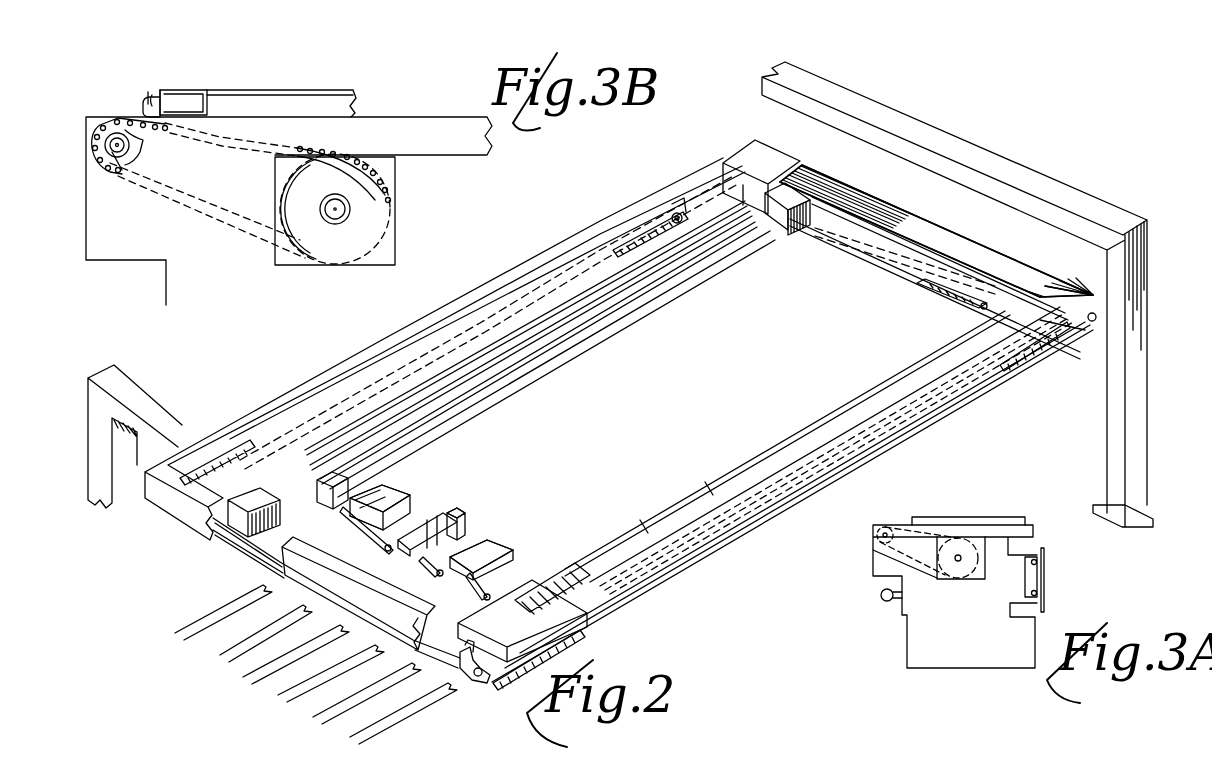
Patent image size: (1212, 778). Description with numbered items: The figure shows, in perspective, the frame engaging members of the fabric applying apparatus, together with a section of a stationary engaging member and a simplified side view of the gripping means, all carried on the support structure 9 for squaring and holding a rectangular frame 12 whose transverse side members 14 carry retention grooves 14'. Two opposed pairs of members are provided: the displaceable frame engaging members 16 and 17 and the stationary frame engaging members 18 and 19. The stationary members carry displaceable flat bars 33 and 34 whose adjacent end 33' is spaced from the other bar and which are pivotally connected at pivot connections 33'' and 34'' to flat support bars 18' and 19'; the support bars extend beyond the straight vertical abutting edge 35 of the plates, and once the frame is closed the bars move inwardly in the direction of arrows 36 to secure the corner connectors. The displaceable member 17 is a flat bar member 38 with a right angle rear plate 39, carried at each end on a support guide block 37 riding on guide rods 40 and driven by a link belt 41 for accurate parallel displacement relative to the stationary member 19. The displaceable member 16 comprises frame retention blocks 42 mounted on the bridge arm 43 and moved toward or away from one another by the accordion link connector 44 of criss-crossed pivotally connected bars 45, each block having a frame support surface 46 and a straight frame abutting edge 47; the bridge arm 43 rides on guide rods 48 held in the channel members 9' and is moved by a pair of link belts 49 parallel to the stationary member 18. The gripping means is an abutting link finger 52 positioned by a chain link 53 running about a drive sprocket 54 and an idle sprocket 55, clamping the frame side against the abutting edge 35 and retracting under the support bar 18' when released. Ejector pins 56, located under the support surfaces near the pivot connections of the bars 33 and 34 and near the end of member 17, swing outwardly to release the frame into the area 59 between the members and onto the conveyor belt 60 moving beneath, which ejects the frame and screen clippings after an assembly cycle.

In FIG. 2, the support structure 9 is at (620, 294).
In FIG. 2, the channel members 9' is at (445, 349).
In FIG. 3B, the rectangular frame 12 is at (205, 98).
In FIG. 3B, the transverse side members 14 is at (189, 84).
In FIG. 3B, the retention grooves 14' is at (160, 80).
In FIG. 2, the displaceable frame engaging member 16 is at (472, 495).
In FIG. 2, the displaceable frame engaging member 17 is at (612, 314).
In FIG. 2, the stationary frame engaging member 18 is at (935, 278).
In FIG. 2, the flat support bar 18' is at (907, 195).
In FIG. 3B, the flat support bar 18' is at (289, 187).
In FIG. 3A, the flat support bar 18' is at (986, 596).
In FIG. 2, the stationary frame engaging member 19 is at (812, 444).
In FIG. 2, the flat support bar 19' is at (482, 678).
In FIG. 2, the displaceable flat bar 33 is at (936, 231).
In FIG. 3A, the displaceable flat bar 33 is at (968, 504).
In FIG. 2, the adjacent end 33' is at (1040, 262).
In FIG. 2, the pivot connection 33'' is at (1066, 274).
In FIG. 2, the displaceable flat bar 34 is at (792, 497).
In FIG. 2, the pivot connection 34'' is at (1062, 354).
In FIG. 3A, the abutting edge 35 is at (906, 520).
In FIG. 2, the arrows 36 is at (562, 596).
In FIG. 2, the support guide block 37 is at (750, 232).
In FIG. 2, the flat bar member 38 is at (702, 260).
In FIG. 2, the rear plate 39 is at (645, 277).
In FIG. 2, the guide rods 40 is at (262, 548).
In FIG. 2, the link belt 41 is at (220, 530).
In FIG. 2, the frame retention blocks 42 is at (500, 540).
In FIG. 2, the bridge arm 43 is at (445, 578).
In FIG. 2, the accordion link connector 44 is at (386, 552).
In FIG. 2, the pivotally connected bars 45 is at (340, 515).
In FIG. 2, the frame support surface 46 is at (458, 512).
In FIG. 2, the frame abutting edge 47 is at (385, 485).
In FIG. 2, the guide rods 48 is at (612, 247).
In FIG. 2, the link belts 49 is at (656, 232).
In FIG. 2, the link finger 52 is at (575, 378).
In FIG. 3B, the link finger 52 is at (130, 123).
In FIG. 3A, the link finger 52 is at (885, 527).
In FIG. 3B, the chain link 53 is at (120, 172).
In FIG. 3B, the drive sprocket 54 is at (280, 230).
In FIG. 3A, the drive sprocket 54 is at (953, 572).
In FIG. 3B, the idle sprocket 55 is at (138, 150).
In FIG. 2, the ejector pins 56 is at (790, 238).
In FIG. 2, the area 59 is at (712, 397).
In FIG. 2, the conveyor belt 60 is at (215, 645).